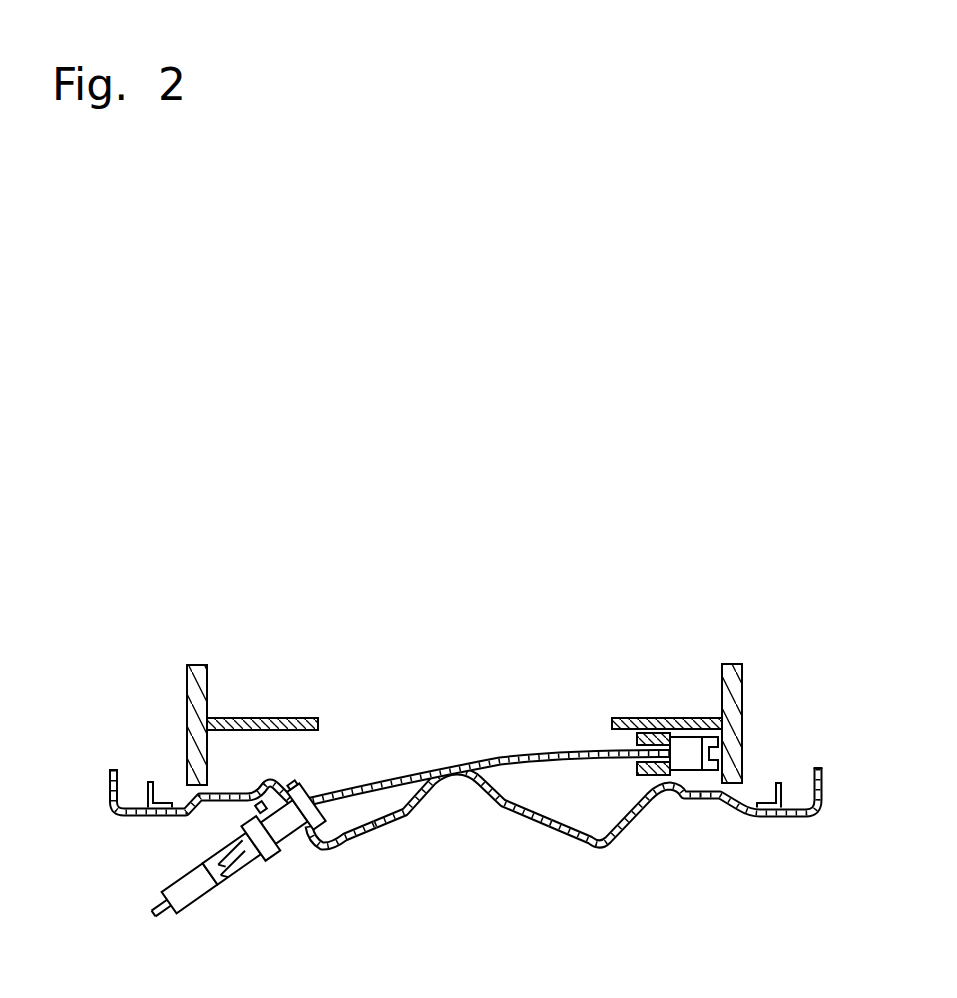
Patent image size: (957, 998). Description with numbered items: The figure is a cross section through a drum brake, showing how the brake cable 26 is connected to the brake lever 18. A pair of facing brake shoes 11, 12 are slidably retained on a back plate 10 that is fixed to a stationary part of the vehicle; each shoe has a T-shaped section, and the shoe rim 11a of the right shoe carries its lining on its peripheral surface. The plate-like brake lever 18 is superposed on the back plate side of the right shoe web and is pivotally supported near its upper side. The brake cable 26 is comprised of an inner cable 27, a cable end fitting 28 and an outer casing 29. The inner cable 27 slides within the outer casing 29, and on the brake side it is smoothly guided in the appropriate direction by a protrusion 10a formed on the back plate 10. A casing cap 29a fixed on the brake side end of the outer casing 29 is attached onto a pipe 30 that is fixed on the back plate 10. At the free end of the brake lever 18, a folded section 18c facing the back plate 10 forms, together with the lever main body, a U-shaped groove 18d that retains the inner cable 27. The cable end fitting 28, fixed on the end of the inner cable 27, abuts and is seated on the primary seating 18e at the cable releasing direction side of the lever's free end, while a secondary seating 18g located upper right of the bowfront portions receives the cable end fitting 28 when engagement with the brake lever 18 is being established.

The back plate 10 is at (466, 860).
The protrusion 10a is at (463, 777).
The brake shoe 11 is at (731, 704).
The shoe rim 11a is at (722, 684).
The brake shoe 12 is at (182, 682).
The brake lever 18 is at (669, 787).
The folded section 18c is at (638, 769).
The U-shaped groove 18d is at (642, 751).
The primary seating 18e is at (677, 782).
The secondary seating 18g is at (720, 772).
The brake cable 26 is at (235, 886).
The inner cable 27 is at (387, 788).
The cable end fitting 28 is at (689, 762).
The outer casing 29 is at (214, 904).
The casing cap 29a is at (268, 866).
The pipe 30 is at (283, 852).